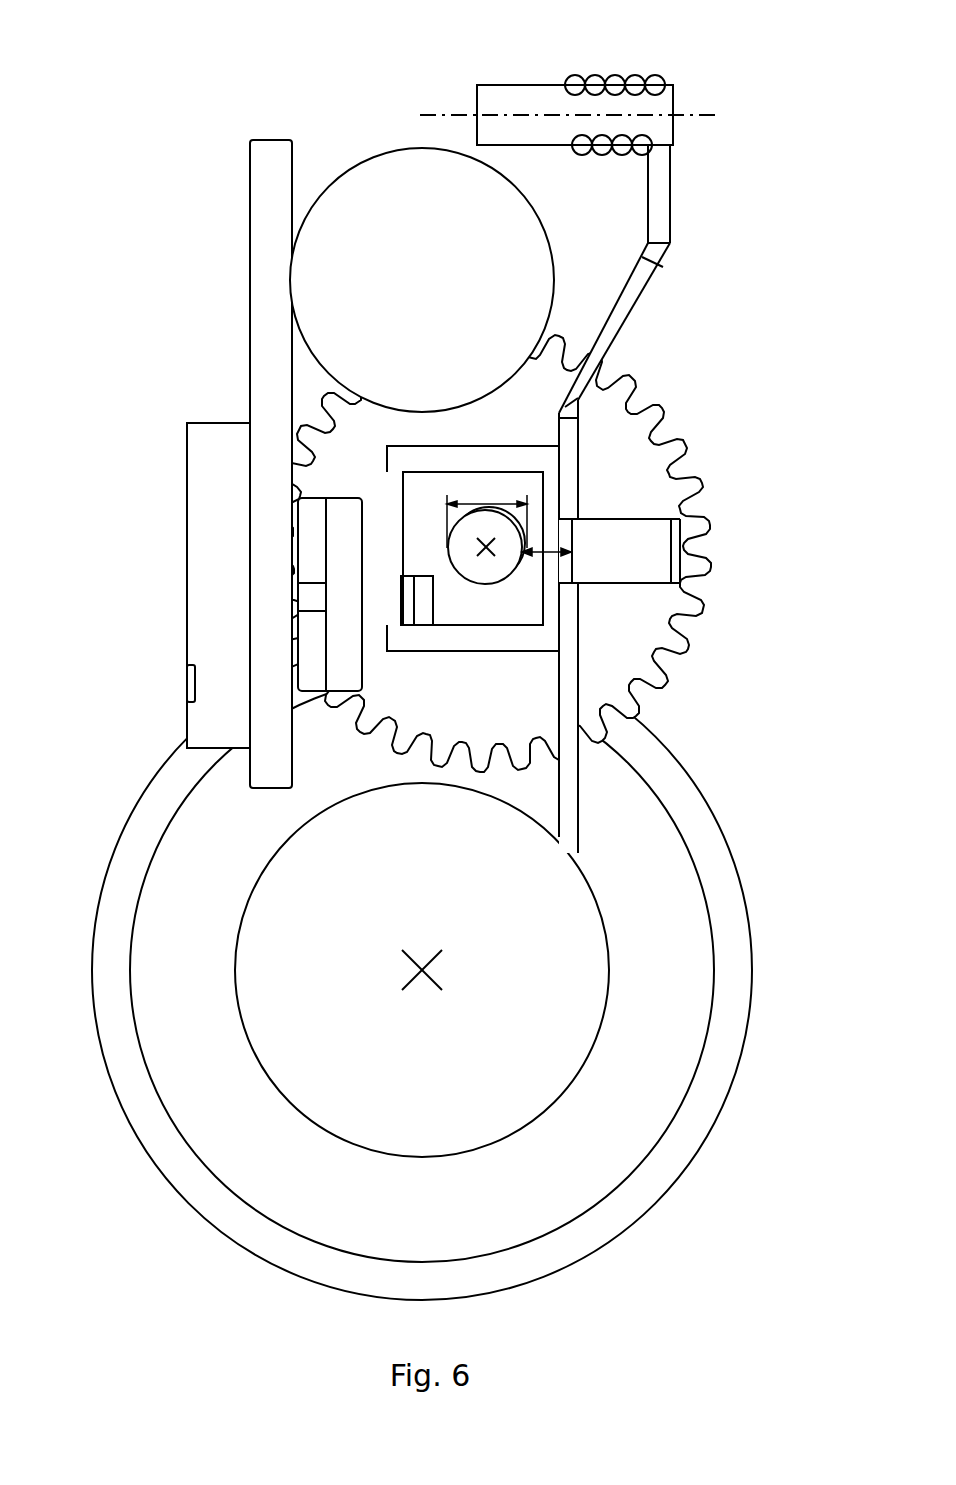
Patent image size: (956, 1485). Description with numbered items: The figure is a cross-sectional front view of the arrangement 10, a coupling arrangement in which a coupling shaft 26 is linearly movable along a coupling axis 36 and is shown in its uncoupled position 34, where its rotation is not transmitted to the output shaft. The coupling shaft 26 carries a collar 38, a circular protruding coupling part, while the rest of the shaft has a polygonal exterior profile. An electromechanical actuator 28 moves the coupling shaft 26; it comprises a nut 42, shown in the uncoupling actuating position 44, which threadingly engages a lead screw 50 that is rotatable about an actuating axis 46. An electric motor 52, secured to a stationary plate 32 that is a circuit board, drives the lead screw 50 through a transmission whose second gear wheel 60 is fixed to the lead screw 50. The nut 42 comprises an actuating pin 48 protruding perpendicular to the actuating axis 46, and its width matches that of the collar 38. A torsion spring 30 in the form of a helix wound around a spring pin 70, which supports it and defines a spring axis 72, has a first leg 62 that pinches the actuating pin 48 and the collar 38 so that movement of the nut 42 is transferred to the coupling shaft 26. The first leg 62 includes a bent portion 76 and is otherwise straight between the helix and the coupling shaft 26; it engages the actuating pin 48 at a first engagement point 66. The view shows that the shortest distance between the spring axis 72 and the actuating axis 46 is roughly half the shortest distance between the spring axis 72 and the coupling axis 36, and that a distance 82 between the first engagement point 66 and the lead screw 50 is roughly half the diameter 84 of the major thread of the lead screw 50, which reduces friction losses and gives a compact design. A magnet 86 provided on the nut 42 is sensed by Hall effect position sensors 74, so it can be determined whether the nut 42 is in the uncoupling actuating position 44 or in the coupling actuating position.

The arrangement 10 is at (171, 103).
The coupling shaft 26 is at (407, 906).
The electromechanical actuator 28 is at (191, 357).
The torsion spring 30 is at (616, 81).
The plate 32 is at (267, 238).
The uncoupled position 34 is at (536, 1130).
The coupling axis 36 is at (410, 967).
The collar 38 is at (594, 928).
The nut 42 is at (512, 457).
The uncoupling actuating position 44 is at (720, 456).
The actuating axis 46 is at (481, 559).
The actuating pin 48 is at (615, 561).
The lead screw 50 is at (490, 570).
The electric motor 52 is at (403, 293).
The second gear wheel 60 is at (650, 417).
The first leg 62 is at (568, 674).
The first engagement point 66 is at (572, 517).
The spring pin 70 is at (528, 98).
The spring axis 72 is at (712, 118).
The position sensor 74 is at (342, 550).
The bent portion 76 is at (633, 297).
The distance 82 is at (558, 556).
The diameter 84 is at (487, 512).
The magnet 86 is at (412, 592).